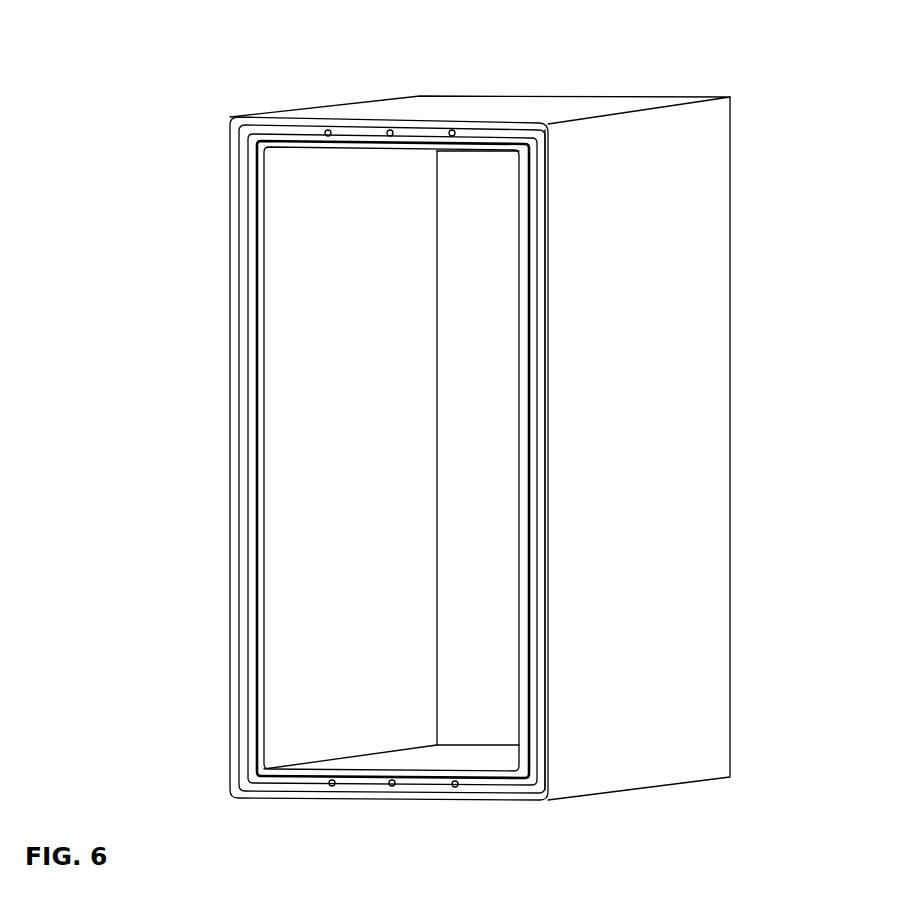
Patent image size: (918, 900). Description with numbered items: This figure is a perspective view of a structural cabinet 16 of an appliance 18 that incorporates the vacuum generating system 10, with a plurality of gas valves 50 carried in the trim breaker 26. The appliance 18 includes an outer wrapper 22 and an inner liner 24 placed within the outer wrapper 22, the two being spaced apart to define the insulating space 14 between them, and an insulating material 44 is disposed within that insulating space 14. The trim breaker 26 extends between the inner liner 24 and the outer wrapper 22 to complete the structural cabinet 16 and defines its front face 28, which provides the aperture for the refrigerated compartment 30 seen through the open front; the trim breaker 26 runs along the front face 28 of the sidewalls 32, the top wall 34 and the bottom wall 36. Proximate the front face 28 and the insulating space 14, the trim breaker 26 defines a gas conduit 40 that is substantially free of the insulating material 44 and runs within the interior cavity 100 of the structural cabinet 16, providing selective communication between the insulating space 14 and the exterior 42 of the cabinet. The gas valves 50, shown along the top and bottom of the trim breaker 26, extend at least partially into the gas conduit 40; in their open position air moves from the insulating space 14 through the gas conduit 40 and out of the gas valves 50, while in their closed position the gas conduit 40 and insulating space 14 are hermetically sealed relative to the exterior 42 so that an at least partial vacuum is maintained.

The vacuum generating system 10 is at (185, 277).
The insulating space 14 is at (690, 290).
The structural cabinet 16 is at (670, 87).
The appliance 18 is at (248, 102).
The outer wrapper 22 is at (683, 445).
The inner liner 24 is at (297, 458).
The trim breaker 26 is at (247, 643).
The front face 28 is at (507, 795).
The refrigerated compartment 30 is at (315, 365).
The sidewall 32 is at (670, 550).
The top wall 34 is at (482, 110).
The bottom wall 36 is at (456, 754).
The gas conduit 40 is at (540, 680).
The exterior 42 is at (632, 366).
The insulating material 44 is at (660, 225).
The gas valve 50 is at (327, 122).
The interior cavity 100 is at (328, 528).